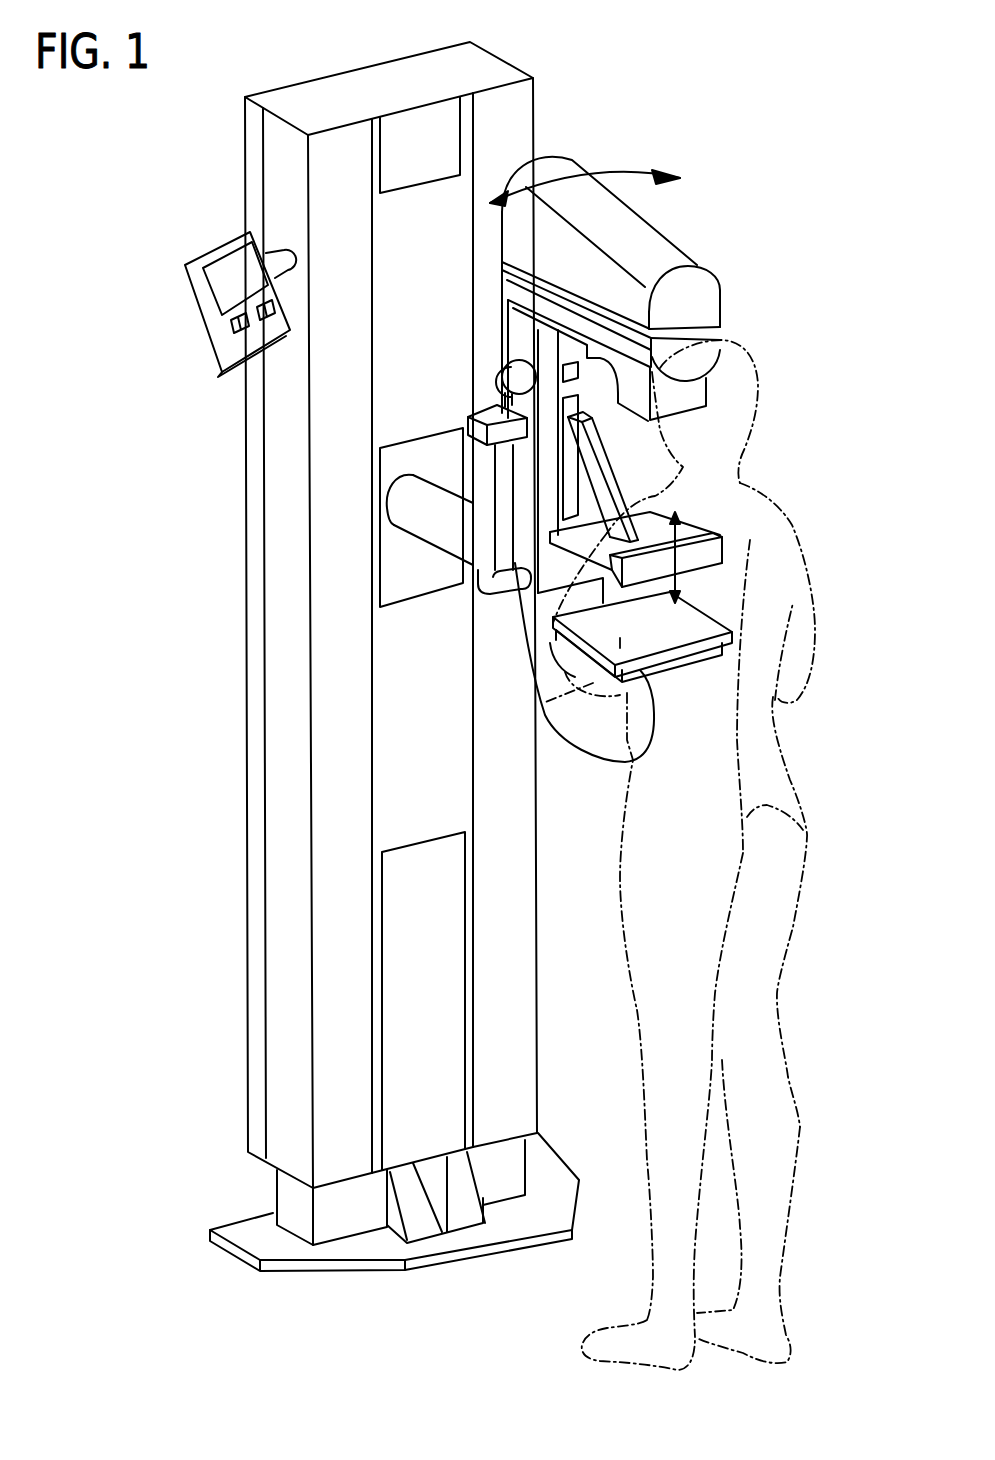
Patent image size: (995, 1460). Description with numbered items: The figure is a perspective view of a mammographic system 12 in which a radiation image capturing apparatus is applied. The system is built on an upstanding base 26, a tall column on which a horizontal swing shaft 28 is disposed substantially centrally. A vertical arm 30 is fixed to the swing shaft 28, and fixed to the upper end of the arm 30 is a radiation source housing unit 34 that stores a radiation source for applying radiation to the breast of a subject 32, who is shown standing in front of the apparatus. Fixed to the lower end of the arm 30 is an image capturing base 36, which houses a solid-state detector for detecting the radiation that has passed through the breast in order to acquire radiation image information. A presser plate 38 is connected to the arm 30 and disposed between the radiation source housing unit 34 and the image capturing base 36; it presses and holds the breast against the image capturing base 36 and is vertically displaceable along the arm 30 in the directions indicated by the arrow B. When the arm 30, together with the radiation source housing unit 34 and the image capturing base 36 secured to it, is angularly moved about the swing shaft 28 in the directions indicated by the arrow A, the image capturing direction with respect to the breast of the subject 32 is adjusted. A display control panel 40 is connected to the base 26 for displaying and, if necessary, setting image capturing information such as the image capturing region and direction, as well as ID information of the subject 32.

The mammographic system 12 is at (826, 195).
The upstanding base 26 is at (295, 897).
The horizontal swing shaft 28 is at (428, 490).
The vertical arm 30 is at (530, 340).
The subject 32 is at (812, 832).
The radiation source housing unit 34 is at (700, 307).
The image capturing base 36 is at (637, 641).
The presser plate 38 is at (714, 548).
The display control panel 40 is at (222, 292).